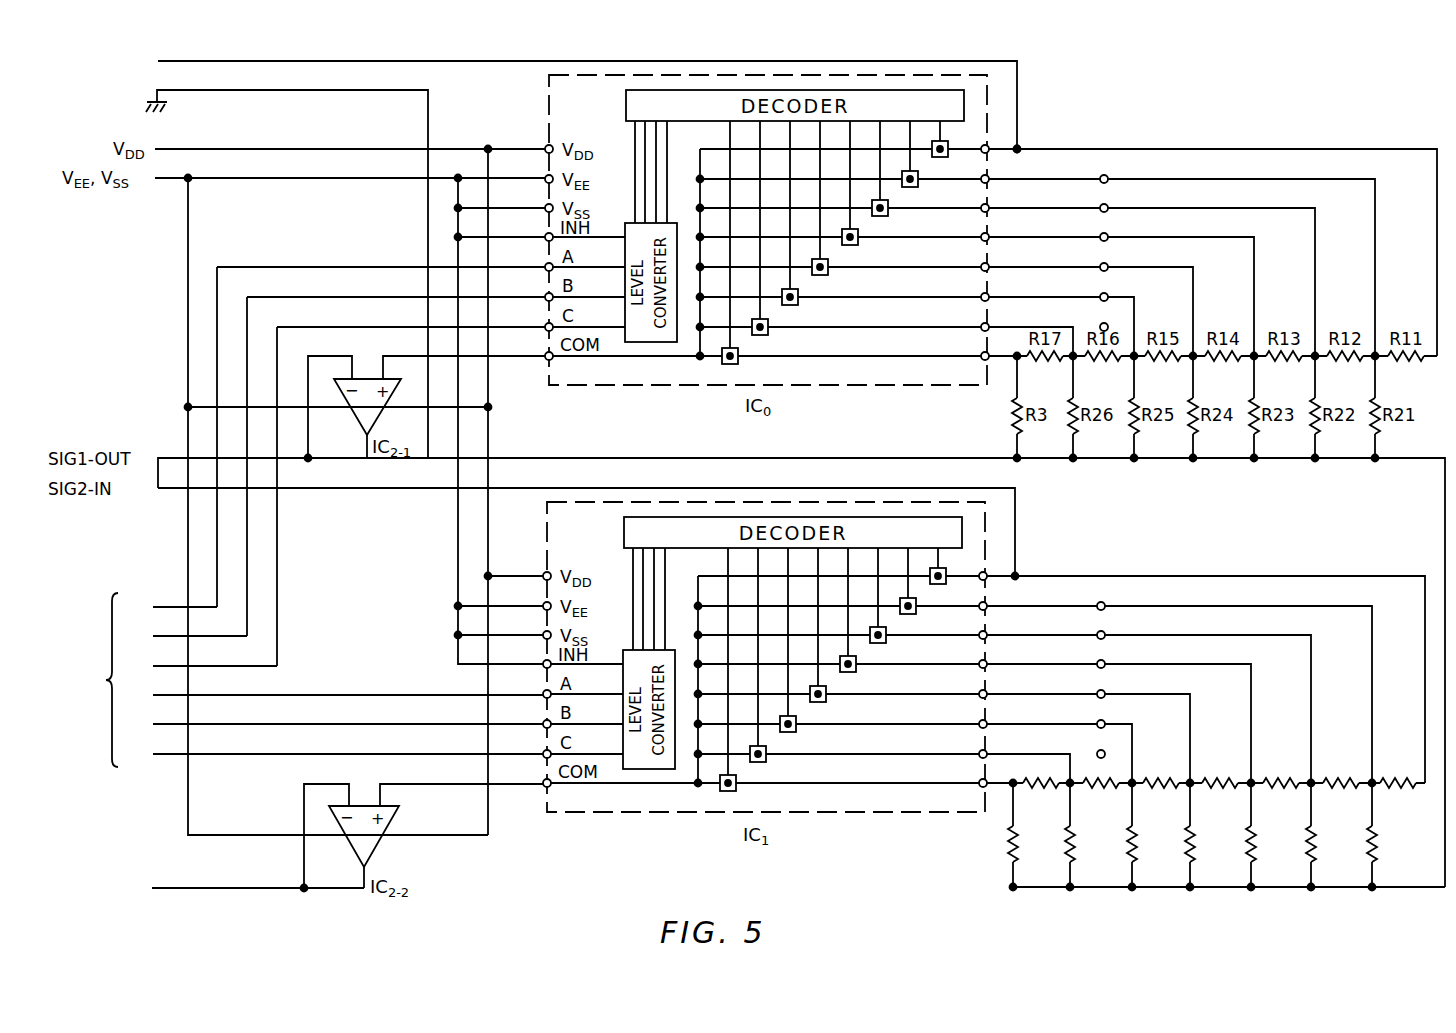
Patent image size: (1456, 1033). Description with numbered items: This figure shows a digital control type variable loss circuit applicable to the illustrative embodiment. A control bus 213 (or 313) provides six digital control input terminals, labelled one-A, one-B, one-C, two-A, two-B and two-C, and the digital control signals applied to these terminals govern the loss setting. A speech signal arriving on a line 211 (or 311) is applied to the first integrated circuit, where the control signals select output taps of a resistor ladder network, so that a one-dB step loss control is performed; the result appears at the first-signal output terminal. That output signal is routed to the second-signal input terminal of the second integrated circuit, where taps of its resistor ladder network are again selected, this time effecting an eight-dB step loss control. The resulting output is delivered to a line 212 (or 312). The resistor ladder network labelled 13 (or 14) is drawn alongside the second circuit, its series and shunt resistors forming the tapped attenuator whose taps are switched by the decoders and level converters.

The line 211 is at (546, 102).
The line 311 is at (546, 102).
The line 212 is at (209, 888).
The line 312 is at (209, 888).
The control bus 213 is at (299, 680).
The control bus 313 is at (299, 680).
The resistor ladder network 13 is at (1216, 757).
The resistor ladder network (alternative) 14 is at (1216, 757).